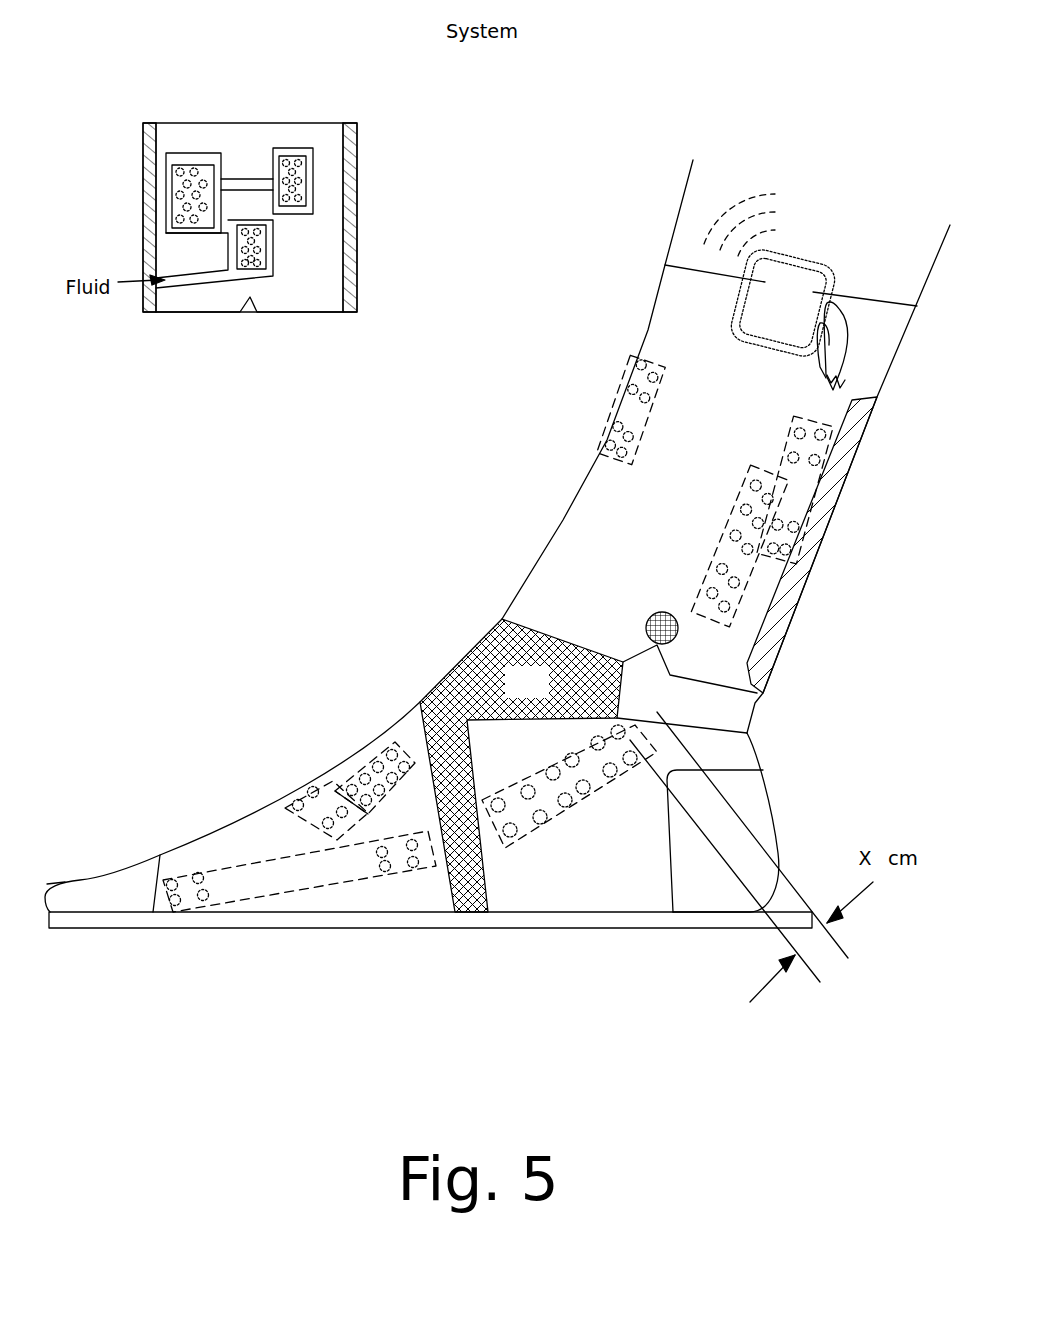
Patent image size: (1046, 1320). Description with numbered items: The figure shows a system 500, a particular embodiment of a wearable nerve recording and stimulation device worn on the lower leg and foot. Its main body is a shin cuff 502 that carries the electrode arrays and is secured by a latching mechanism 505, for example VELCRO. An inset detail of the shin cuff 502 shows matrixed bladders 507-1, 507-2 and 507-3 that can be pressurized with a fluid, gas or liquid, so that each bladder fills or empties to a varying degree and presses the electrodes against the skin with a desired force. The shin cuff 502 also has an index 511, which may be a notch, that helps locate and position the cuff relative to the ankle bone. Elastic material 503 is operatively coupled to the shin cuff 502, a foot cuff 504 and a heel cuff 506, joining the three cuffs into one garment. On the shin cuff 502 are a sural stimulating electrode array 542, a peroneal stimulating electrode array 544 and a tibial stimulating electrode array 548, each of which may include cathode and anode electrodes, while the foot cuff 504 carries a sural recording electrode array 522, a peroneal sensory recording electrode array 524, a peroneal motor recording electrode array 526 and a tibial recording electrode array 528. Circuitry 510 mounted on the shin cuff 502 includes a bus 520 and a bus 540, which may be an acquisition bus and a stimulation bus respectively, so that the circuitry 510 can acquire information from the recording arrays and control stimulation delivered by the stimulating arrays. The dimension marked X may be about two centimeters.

The system 500 is at (543, 31).
The shin cuff 502 is at (258, 123).
The elastic material 503 is at (463, 587).
The foot cuff 504 is at (203, 840).
The latching mechanism 505 is at (357, 186).
The heel cuff 506 is at (563, 898).
The matrixed bladder 507-1 is at (284, 148).
The matrixed bladder 507-2 is at (213, 153).
The matrixed bladder 507-3 is at (273, 276).
The circuitry 510 is at (843, 213).
The index 511 is at (255, 313).
The bus 520 is at (847, 332).
The bus 540 is at (838, 348).
The sural recording electrode array 522 is at (600, 788).
The peroneal sensory recording electrode array 524 is at (392, 745).
The peroneal motor recording electrode array 526 is at (303, 792).
The tibial recording electrode array 528 is at (233, 895).
The sural stimulating electrode array 542 is at (822, 418).
The peroneal stimulating electrode array 544 is at (625, 407).
The tibial stimulating electrode array 548 is at (740, 508).